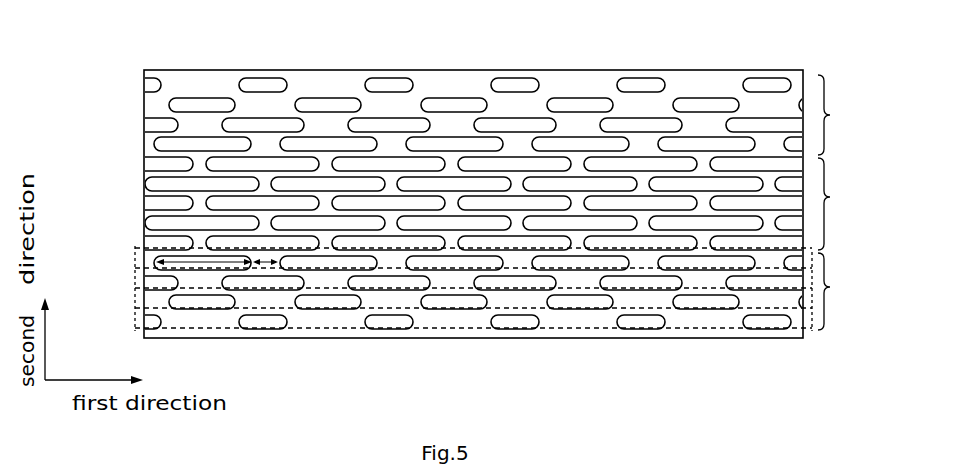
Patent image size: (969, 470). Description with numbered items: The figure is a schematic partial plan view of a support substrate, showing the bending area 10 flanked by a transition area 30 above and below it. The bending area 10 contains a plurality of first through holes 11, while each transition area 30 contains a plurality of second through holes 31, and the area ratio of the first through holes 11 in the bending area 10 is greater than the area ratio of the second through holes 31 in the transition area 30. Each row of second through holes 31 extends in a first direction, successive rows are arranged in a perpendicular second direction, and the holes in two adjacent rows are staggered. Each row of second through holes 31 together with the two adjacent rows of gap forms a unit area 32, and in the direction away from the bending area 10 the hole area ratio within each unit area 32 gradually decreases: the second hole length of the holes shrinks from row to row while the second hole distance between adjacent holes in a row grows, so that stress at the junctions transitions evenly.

The bending area 10 is at (838, 204).
The first through holes 11 is at (267, 165).
The transition area 30 is at (837, 202).
The second through holes 31 is at (447, 105).
The unit area 32 is at (133, 249).